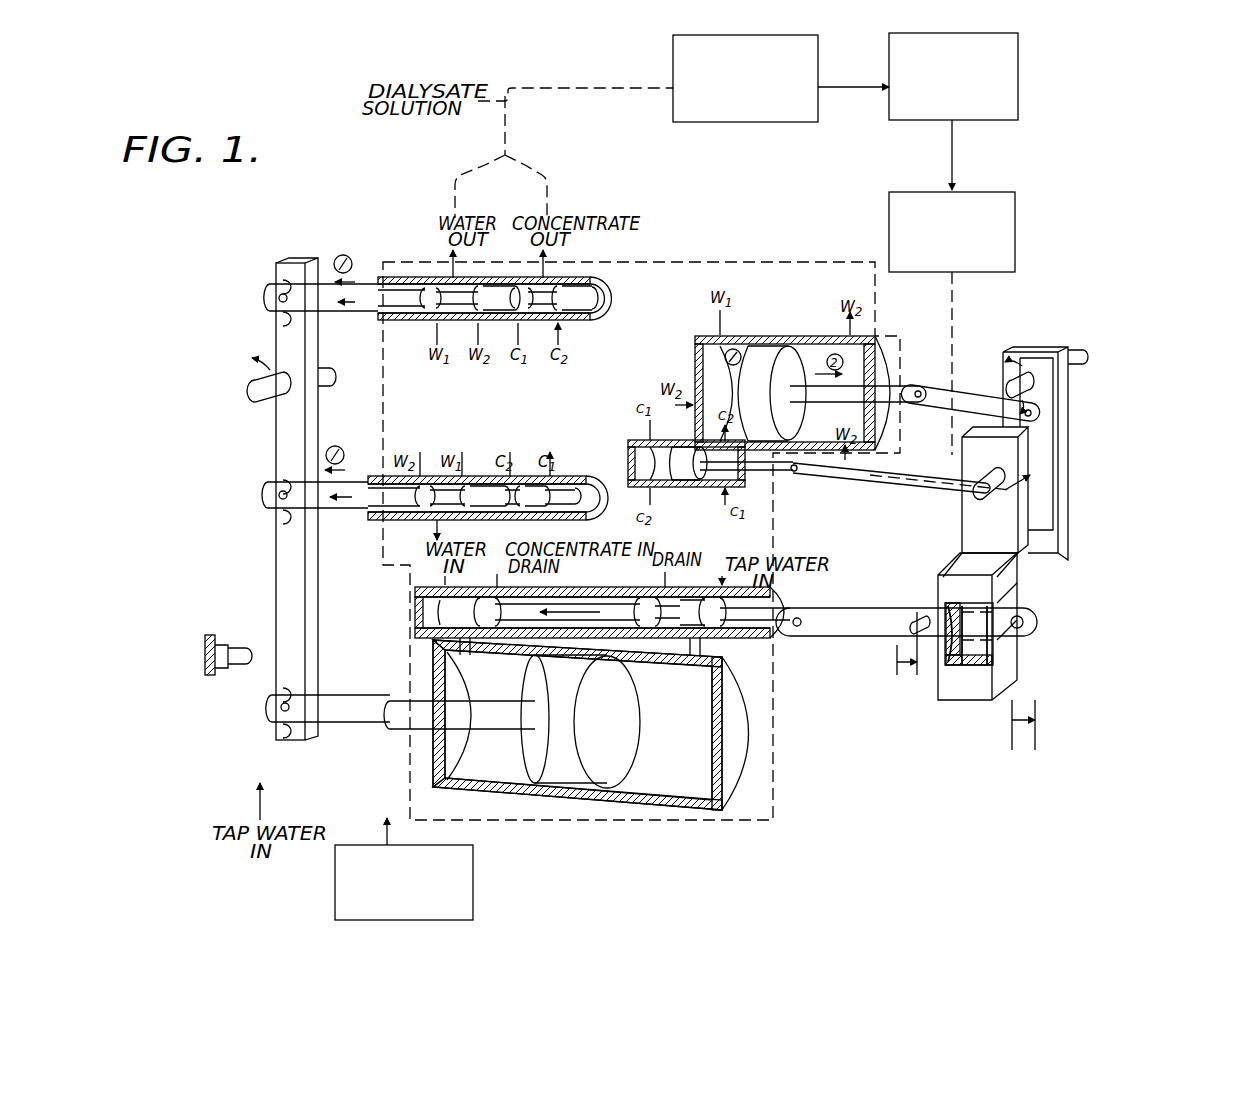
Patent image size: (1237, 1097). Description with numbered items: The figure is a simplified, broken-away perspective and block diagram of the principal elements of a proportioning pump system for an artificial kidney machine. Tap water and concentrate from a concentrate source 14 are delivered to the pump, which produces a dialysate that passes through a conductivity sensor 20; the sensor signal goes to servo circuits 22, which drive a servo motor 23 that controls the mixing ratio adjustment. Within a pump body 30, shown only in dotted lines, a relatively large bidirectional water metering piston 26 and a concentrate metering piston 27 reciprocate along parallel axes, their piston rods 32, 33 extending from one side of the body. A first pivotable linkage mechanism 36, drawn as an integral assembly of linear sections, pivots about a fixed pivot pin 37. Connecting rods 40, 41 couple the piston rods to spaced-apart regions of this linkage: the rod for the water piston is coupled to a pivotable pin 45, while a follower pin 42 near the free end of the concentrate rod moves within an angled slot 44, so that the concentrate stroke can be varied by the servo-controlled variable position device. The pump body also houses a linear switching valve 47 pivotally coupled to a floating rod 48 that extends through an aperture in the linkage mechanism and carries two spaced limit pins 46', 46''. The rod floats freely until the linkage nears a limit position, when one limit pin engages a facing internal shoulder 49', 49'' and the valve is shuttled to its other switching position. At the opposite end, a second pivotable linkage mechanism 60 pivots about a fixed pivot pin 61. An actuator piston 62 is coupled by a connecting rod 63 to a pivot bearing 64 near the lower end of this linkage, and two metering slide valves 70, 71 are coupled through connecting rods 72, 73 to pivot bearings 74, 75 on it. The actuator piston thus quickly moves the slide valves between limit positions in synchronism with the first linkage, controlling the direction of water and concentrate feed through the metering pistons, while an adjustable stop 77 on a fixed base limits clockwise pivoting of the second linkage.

The concentrate source 14 is at (335, 910).
The conductivity sensor 20 is at (673, 48).
The servo circuits 22 is at (1018, 50).
The servo motor 23 is at (1015, 222).
The water metering piston 26 is at (758, 350).
The concentrate metering piston 27 is at (690, 470).
The pump body 30 is at (712, 262).
The piston rod 32 is at (898, 388).
The piston rod 33 is at (793, 472).
The first pivotable linkage mechanism 36 is at (1090, 498).
The fixed pivot pin 37 is at (1088, 355).
The connecting rod 40 is at (960, 392).
The connecting rod 41 is at (912, 472).
The follower pin 42 is at (978, 492).
The angled slot 44 is at (980, 498).
The pivotable pin 45 is at (1038, 411).
The limit pin 46' is at (913, 606).
The limit pin 46'' is at (1057, 621).
The linear switching valve 47 is at (760, 640).
The floating rod 48 is at (855, 612).
The internal shoulder 49' is at (964, 643).
The internal shoulder 49'' is at (1023, 642).
The second pivotable linkage mechanism 60 is at (265, 570).
The fixed pivot pin 61 is at (255, 391).
The actuator piston 62 is at (540, 765).
The connecting rod 63 is at (400, 729).
The pivot bearing 64 is at (280, 707).
The metering slide valve 70 is at (390, 256).
The metering slide valve 71 is at (358, 482).
The connecting rod 72 is at (328, 310).
The connecting rod 73 is at (330, 512).
The pivot bearing 74 is at (278, 298).
The pivot bearing 75 is at (276, 495).
The adjustable stop 77 is at (246, 662).